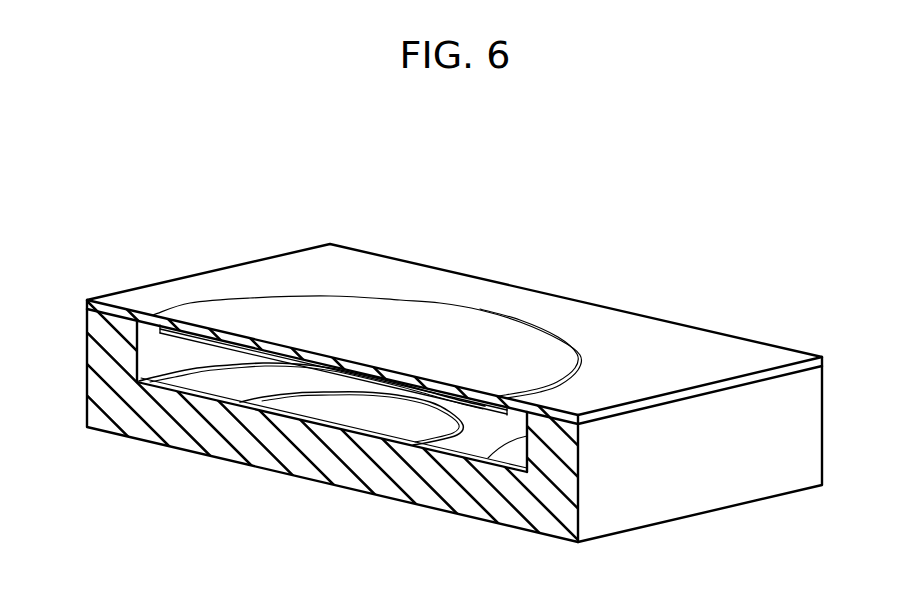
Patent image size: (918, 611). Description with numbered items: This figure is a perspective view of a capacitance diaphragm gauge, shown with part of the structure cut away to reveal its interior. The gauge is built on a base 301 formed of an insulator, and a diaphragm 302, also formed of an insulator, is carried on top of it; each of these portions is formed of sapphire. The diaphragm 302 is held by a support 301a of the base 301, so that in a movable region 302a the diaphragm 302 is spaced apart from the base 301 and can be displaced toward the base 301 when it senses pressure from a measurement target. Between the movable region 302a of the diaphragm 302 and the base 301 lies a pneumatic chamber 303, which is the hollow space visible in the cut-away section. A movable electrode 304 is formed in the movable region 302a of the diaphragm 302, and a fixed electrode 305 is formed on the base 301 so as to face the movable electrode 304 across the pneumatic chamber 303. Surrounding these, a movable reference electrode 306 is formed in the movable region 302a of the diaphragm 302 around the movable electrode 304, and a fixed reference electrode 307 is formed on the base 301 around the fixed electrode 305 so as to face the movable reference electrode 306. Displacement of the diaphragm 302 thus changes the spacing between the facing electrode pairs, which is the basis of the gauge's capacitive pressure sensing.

The base 301 is at (823, 426).
The support 301a is at (98, 343).
The diaphragm 302 is at (823, 358).
The movable region 302a is at (529, 565).
The pneumatic chamber 303 is at (150, 362).
The movable electrode 304 is at (298, 380).
The fixed electrode 305 is at (337, 428).
The movable reference electrode 306 is at (152, 384).
The fixed reference electrode 307 is at (162, 333).